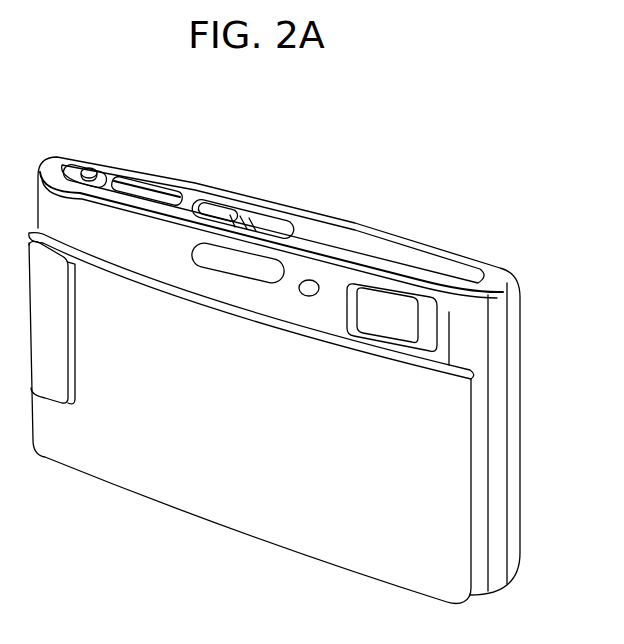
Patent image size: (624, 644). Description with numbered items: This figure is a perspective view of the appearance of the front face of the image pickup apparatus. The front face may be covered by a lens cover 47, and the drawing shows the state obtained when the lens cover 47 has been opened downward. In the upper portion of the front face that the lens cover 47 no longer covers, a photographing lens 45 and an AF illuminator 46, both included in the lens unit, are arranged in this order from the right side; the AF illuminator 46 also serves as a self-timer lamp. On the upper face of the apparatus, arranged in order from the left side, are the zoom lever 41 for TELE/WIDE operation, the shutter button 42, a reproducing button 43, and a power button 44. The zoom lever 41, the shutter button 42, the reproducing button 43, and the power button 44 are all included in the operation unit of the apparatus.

The zoom lever 41 is at (75, 163).
The shutter button 42 is at (128, 178).
The reproducing button 43 is at (217, 213).
The power button 44 is at (273, 227).
The photographing lens 45 is at (405, 322).
The AF illuminator 46 is at (308, 283).
The lens cover 47 is at (440, 482).